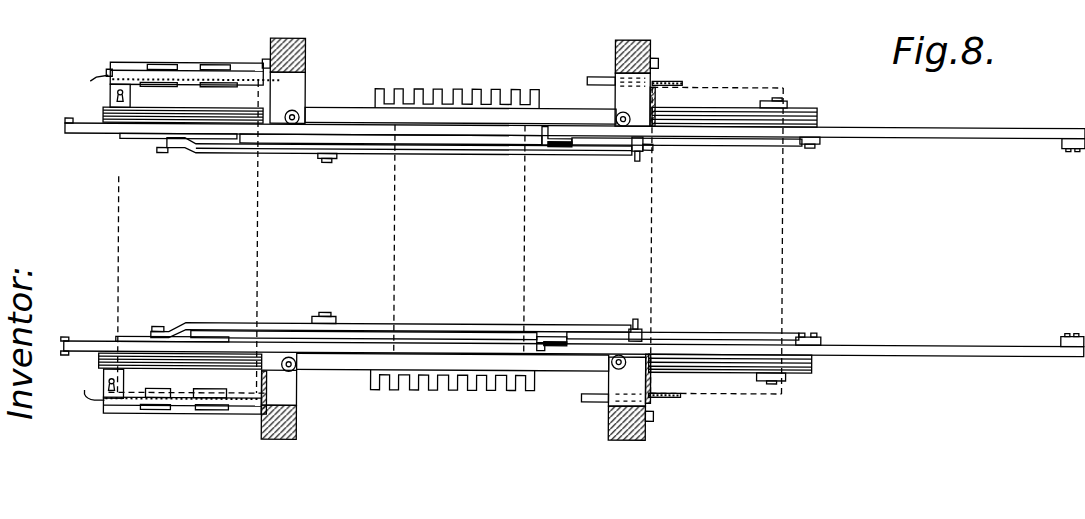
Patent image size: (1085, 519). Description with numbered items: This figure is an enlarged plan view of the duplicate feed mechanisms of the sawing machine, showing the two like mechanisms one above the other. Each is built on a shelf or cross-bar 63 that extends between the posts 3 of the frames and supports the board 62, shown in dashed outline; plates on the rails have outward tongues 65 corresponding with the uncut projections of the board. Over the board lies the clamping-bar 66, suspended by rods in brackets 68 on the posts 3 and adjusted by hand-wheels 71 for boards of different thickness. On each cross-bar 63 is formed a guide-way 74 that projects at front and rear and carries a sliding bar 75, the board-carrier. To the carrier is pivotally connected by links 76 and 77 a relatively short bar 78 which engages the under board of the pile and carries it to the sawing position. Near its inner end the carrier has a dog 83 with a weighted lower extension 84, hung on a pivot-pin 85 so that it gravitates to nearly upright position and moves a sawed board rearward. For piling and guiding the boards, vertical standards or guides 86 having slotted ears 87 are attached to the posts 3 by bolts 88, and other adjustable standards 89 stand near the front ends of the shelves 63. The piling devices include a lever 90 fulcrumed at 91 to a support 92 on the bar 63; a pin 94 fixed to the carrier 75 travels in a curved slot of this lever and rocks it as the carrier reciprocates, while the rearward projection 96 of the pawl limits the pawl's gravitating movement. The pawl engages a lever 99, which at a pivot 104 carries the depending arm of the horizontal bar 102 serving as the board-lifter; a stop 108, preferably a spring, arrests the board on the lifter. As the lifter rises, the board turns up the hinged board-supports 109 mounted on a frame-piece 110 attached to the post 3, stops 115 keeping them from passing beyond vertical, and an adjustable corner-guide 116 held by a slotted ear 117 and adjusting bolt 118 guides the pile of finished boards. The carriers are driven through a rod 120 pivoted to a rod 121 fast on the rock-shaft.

The posts 3 is at (305, 42).
The board 62 is at (122, 203).
The shelves or cross-bars 63 is at (102, 108).
The outward tongues 65 is at (477, 87).
The clamping-bar 66 is at (350, 108).
The brackets 68 is at (303, 106).
The hand-wheels 71 is at (300, 112).
The guide-ways 74 is at (380, 128).
The sliding bar 75 is at (722, 133).
The link 76 is at (812, 145).
The link 77 is at (1066, 141).
The bar 78 is at (960, 134).
The dog 83 is at (548, 128).
The weighted lower extension 84 is at (573, 144).
The pivot-pin 85 is at (558, 142).
The vertical standards or guides 86 is at (657, 100).
The slotted ears 87 is at (653, 50).
The bolts 88 is at (658, 61).
The adjustable standards 89 is at (797, 97).
The lever 90 is at (192, 154).
The fulcrum 91 is at (332, 161).
The support 92 is at (322, 159).
The pin 94 is at (636, 159).
The rearward projection 96 is at (133, 139).
The lever 99 is at (80, 135).
The horizontal bar 102 is at (83, 120).
The pivot 104 is at (66, 120).
The stop 108 is at (90, 80).
The board-supports 109 is at (142, 82).
The frame-piece 110 is at (187, 79).
The stops 115 is at (168, 58).
The adjustable corner-guide 116 is at (262, 60).
The slotted ear 117 is at (266, 438).
The adjusting bolt 118 is at (259, 413).
The rod 120 is at (430, 0).
The rod 121 is at (231, 8).